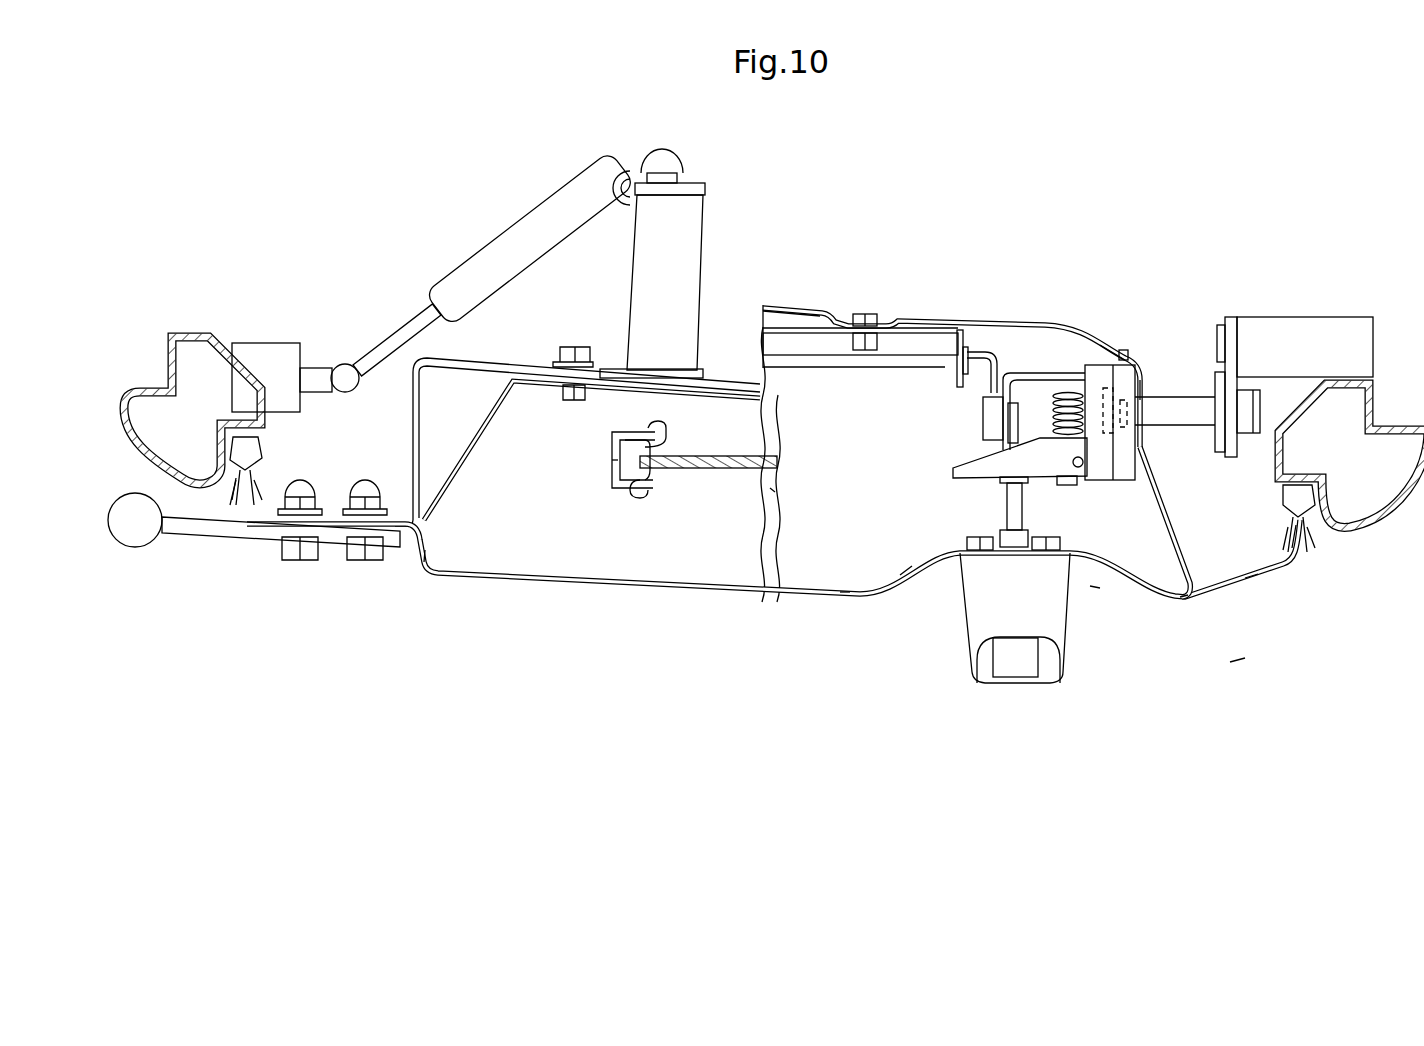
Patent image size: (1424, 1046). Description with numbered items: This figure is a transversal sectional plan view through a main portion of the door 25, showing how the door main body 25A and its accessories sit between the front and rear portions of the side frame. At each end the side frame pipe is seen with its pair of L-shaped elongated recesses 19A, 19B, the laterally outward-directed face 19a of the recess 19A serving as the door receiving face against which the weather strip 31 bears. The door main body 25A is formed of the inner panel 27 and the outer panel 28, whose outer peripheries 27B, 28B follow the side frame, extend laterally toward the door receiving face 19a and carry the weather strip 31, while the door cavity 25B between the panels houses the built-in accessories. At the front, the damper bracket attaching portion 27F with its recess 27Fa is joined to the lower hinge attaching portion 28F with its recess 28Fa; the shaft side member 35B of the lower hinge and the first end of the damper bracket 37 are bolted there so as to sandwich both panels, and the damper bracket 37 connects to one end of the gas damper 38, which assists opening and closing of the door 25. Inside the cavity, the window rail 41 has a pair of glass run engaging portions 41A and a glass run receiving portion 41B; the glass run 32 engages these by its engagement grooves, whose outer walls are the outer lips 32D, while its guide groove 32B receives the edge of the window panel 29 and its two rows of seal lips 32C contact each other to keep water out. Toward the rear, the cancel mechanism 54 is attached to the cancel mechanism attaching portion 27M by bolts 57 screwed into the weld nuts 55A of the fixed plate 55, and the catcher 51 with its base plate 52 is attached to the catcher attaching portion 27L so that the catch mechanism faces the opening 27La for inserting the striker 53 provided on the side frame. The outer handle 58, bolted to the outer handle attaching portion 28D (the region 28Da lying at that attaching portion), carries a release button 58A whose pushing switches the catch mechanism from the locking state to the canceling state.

The elongated recess 19B is at (165, 357).
The door receiving face 19a is at (257, 437).
The elongated recess 19A is at (217, 487).
The weather strip 31 is at (232, 443).
The gas damper 38 is at (497, 256).
The glass run engaging portion 41A is at (700, 548).
The damper bracket 37 is at (480, 360).
The damper bracket attaching portion 27F is at (424, 516).
The recess 27Fa is at (416, 512).
The outer panel 28 is at (800, 597).
The lower hinge attaching portion 28F is at (398, 555).
The recess 28Fa is at (415, 567).
The shaft side member 35B is at (172, 533).
The glass run receiving portion 41B is at (613, 447).
The outer lip 32D is at (670, 438).
The seal lip 32C is at (650, 468).
The window rail 41 is at (607, 467).
The glass run 32 is at (655, 485).
The guide groove 32B is at (648, 423).
The inner panel 27 is at (970, 322).
The cancel mechanism attaching portion 27M is at (827, 312).
The bolt 57 is at (862, 313).
The catcher attaching portion 27L is at (1104, 344).
The catcher 51 is at (1120, 355).
The opening 27La is at (1143, 370).
The outer periphery 27B is at (1253, 578).
The cancel mechanism 54 is at (808, 375).
The fixed plate 55 is at (925, 337).
The weld nut 55A is at (878, 343).
The base plate 52 is at (1123, 480).
The striker 53 is at (1188, 400).
The outer handle 58 is at (965, 647).
The release button 58A is at (1005, 668).
The inclined portion 28Da is at (905, 570).
The door cavity 25B is at (843, 573).
The outer handle attaching portion 28D is at (1095, 592).
The door main body 25A is at (1183, 597).
The door 25 is at (1237, 660).
The outer periphery 28B is at (1247, 583).
The window panel 29 is at (770, 490).